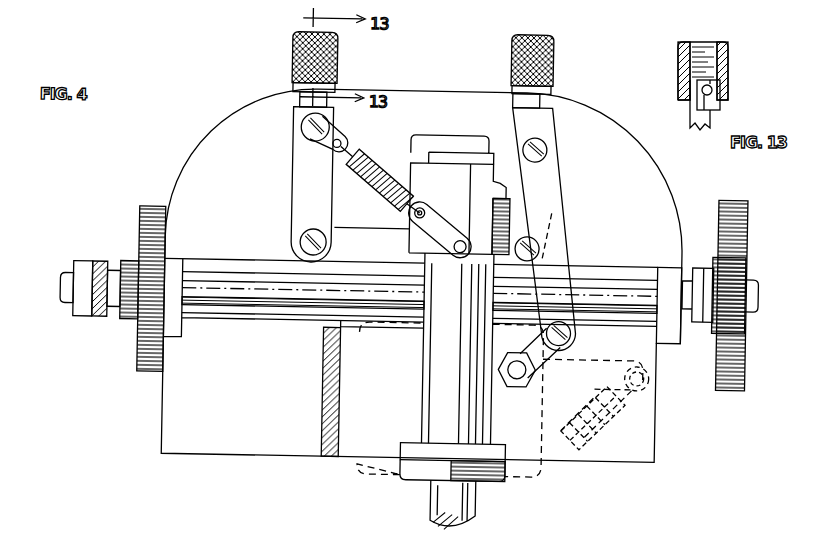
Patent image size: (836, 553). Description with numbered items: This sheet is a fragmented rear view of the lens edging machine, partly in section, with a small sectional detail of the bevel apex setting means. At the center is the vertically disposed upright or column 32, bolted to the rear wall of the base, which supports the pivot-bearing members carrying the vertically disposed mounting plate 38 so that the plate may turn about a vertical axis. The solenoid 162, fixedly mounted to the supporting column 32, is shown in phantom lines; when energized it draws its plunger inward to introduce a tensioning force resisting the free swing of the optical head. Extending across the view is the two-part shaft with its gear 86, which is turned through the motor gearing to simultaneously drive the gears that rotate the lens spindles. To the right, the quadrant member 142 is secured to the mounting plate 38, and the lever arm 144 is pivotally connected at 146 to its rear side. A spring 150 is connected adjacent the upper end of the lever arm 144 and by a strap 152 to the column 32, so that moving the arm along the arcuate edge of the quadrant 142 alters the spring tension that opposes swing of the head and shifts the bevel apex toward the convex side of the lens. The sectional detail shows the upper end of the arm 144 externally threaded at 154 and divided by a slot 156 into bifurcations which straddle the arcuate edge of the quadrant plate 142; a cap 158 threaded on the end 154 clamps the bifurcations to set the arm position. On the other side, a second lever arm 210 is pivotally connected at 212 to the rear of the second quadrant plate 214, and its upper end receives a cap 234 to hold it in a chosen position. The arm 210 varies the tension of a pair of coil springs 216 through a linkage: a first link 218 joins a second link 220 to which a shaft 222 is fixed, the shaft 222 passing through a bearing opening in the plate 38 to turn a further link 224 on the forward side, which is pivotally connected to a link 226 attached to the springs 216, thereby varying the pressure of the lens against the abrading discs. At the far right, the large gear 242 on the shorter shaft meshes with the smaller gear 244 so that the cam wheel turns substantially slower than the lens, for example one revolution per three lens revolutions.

In FIG. 4, the upright support or column 32 is at (423, 387).
In FIG. 4, the mounting plate 38 is at (161, 430).
In FIG. 4, the gear 86 is at (138, 355).
In FIG. 4, the quadrant member 142 is at (201, 145).
In FIG. 13, the quadrant member 142 is at (692, 115).
In FIG. 4, the lever arm 144 is at (290, 187).
In FIG. 4, the pivotal connection 146 is at (293, 247).
In FIG. 4, the spring 150 is at (391, 168).
In FIG. 4, the strap 152 is at (405, 219).
In FIG. 13, the externally threaded end 154 is at (722, 62).
In FIG. 13, the slot 156 is at (712, 90).
In FIG. 4, the cap 158 is at (284, 47).
In FIG. 13, the cap 158 is at (680, 53).
In FIG. 4, the solenoid 162 is at (359, 470).
In FIG. 4, the second lever arm 210 is at (510, 111).
In FIG. 4, the pivotal connection 212 is at (525, 239).
In FIG. 4, the second quadrant plate 214 is at (657, 172).
In FIG. 4, the pair of coil springs 216 is at (598, 450).
In FIG. 4, the first link 218 is at (560, 254).
In FIG. 4, the second link 220 is at (553, 351).
In FIG. 4, the shaft 222 is at (526, 386).
In FIG. 4, the further link 224 is at (594, 389).
In FIG. 4, the link 226 is at (626, 404).
In FIG. 4, the cap 234 is at (549, 44).
In FIG. 4, the large gear 242 is at (748, 224).
In FIG. 4, the smaller gear 244 is at (748, 271).